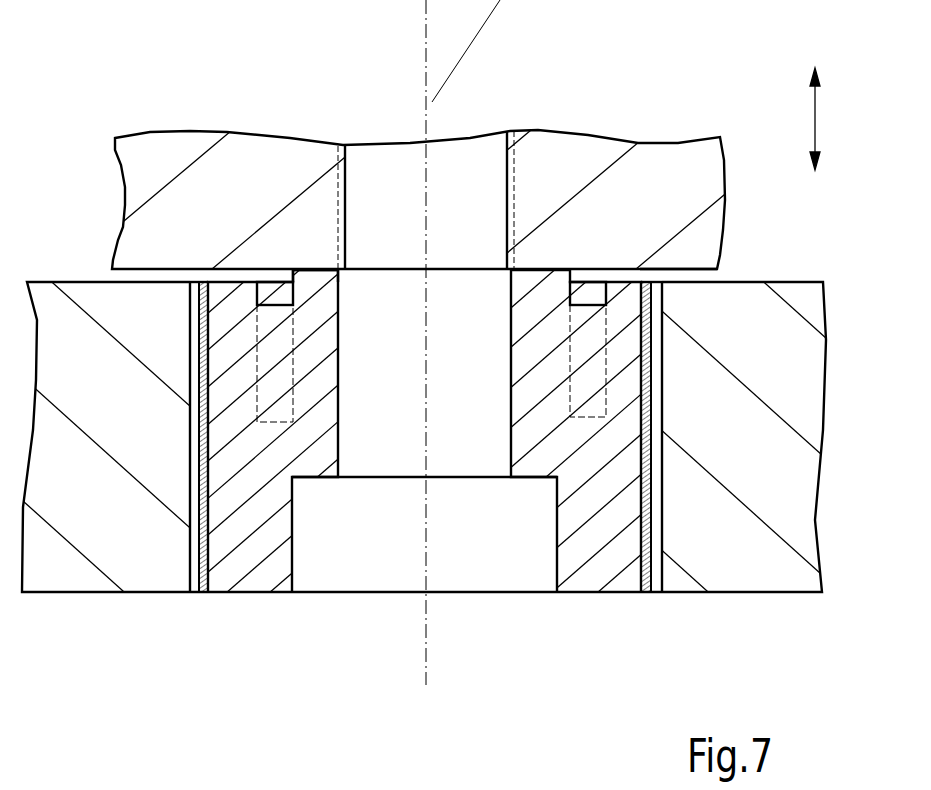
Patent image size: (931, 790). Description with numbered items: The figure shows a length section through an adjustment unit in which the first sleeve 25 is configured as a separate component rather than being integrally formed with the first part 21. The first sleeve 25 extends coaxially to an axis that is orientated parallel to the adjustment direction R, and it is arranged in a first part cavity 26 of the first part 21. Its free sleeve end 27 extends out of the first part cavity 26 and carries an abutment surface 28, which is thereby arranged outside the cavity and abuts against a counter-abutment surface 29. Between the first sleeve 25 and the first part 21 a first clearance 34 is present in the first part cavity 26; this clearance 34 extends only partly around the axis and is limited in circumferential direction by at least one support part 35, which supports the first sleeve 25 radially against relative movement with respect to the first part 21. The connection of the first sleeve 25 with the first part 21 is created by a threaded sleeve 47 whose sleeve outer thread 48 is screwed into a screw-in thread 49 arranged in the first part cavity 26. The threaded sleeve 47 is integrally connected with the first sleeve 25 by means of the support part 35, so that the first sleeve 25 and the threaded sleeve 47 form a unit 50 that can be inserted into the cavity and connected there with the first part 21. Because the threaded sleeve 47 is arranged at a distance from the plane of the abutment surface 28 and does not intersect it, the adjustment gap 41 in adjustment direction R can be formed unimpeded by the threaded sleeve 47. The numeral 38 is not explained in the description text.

The first part 21 is at (820, 435).
The first sleeve 25 is at (323, 367).
The first part cavity 26 is at (662, 392).
The free sleeve end 27 is at (320, 282).
The abutment surface 28 is at (550, 265).
The counter-abutment surface 29 is at (527, 278).
The first clearance 34 is at (190, 407).
The support part 35 is at (602, 332).
The upper tool / punch 38 is at (512, 128).
The adjustment gap 41 is at (703, 273).
The threaded sleeve 47 is at (223, 480).
The sleeve outer thread 48 is at (645, 593).
The screw-in thread 49 is at (660, 592).
The unit 50 is at (288, 789).
The adjustment direction R is at (818, 130).